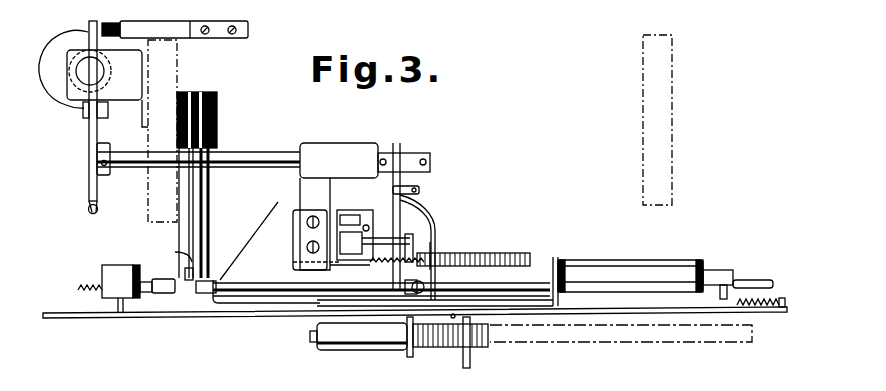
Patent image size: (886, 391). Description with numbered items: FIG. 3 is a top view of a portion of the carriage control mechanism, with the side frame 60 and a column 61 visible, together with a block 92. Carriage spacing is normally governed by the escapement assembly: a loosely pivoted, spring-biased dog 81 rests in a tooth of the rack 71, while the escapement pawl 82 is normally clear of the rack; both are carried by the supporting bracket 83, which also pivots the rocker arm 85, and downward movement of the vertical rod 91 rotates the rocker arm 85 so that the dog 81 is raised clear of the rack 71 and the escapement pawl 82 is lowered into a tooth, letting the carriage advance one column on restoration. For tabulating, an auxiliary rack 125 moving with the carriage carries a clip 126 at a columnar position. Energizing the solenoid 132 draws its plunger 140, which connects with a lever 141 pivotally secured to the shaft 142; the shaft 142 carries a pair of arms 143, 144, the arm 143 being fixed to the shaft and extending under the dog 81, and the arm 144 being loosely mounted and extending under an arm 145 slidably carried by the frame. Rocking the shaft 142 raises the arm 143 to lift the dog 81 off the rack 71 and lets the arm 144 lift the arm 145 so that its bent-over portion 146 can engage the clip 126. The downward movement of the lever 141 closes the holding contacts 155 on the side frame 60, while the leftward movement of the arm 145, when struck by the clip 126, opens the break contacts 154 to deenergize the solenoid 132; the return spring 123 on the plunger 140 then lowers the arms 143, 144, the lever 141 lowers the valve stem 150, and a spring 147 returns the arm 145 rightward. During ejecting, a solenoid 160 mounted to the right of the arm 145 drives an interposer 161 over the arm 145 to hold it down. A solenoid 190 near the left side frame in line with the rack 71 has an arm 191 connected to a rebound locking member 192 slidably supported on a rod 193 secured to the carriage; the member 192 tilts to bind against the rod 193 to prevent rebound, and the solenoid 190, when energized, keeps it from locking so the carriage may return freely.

The side frame 60 is at (176, 74).
The column 61 is at (642, 62).
The rack 71 is at (490, 255).
The dog 81 is at (430, 256).
The escapement pawl 82 is at (296, 257).
The supporting bracket 83 is at (283, 200).
The rocker arm 85 is at (362, 215).
The vertical rod 91 is at (306, 236).
The block 92 is at (371, 247).
The return spring 123 is at (70, 71).
The auxiliary rack 125 is at (488, 338).
The clip 126 is at (470, 354).
The solenoid 132 is at (62, 52).
The plunger 140 is at (80, 73).
The lever 141 is at (89, 190).
The shaft 142 is at (130, 172).
The arm 143 is at (394, 198).
The arm 144 is at (430, 262).
The arm 145 is at (298, 290).
The bent-over portion 146 is at (453, 319).
The spring 147 is at (210, 240).
The valve stem 150 is at (90, 216).
The contacts 154 is at (186, 250).
The holding contacts 155 is at (137, 40).
The solenoid 160 is at (671, 271).
The interposer 161 is at (602, 312).
The solenoid 190 is at (116, 265).
The arm 191 is at (250, 270).
The rebound locking member 192 is at (424, 284).
The rod 193 is at (506, 282).